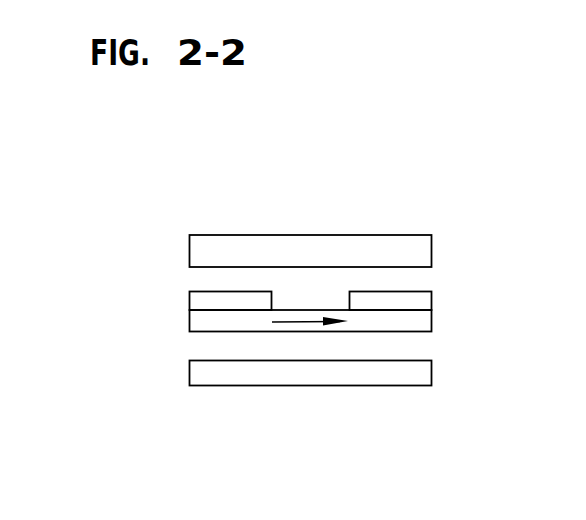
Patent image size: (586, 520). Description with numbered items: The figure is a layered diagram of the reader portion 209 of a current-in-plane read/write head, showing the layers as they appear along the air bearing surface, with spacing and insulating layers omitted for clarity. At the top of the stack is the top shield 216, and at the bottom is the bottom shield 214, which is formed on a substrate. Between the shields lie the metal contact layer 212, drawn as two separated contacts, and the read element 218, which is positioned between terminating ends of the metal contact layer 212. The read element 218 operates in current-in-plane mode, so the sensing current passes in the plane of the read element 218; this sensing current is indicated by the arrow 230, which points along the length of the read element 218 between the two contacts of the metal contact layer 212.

The reader portion 209 is at (118, 247).
The metal contact layer 212 is at (200, 302).
The bottom shield 214 is at (421, 374).
The top shield 216 is at (418, 252).
The read element 218 is at (415, 321).
The arrow 230 is at (312, 322).